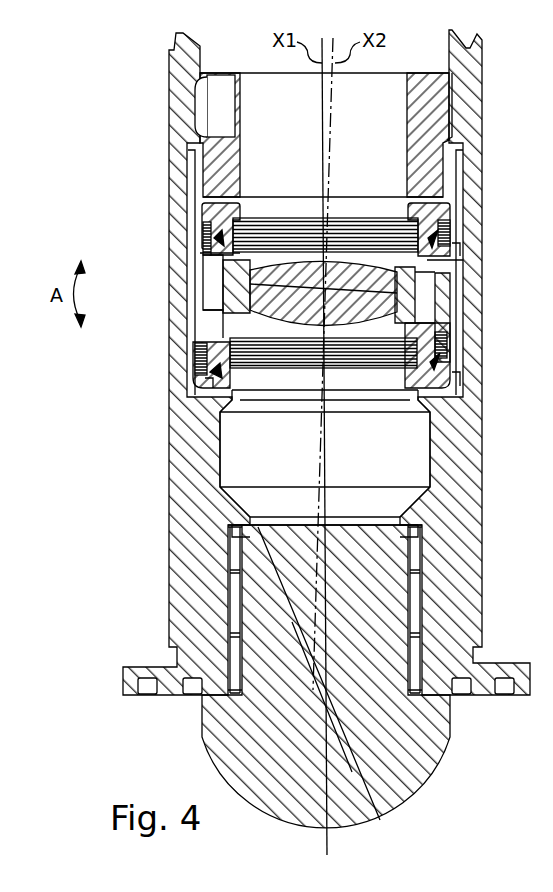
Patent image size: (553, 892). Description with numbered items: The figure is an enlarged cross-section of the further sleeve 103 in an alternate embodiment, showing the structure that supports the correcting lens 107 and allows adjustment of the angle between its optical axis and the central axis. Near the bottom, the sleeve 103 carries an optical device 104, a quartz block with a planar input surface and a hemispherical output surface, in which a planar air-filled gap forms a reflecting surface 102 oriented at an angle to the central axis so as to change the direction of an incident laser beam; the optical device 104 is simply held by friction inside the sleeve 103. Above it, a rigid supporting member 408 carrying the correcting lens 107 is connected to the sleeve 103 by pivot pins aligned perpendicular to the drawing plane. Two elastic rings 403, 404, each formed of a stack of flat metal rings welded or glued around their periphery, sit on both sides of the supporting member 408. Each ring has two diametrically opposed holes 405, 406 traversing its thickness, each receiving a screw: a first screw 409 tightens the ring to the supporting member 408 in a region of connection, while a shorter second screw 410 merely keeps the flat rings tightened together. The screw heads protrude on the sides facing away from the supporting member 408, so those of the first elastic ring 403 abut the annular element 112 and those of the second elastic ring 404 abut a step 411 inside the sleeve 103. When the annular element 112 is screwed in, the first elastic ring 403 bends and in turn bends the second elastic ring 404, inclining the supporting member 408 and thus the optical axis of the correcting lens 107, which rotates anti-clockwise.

The reflecting surface 102 is at (346, 742).
The further sleeve 103 is at (470, 141).
The optical device 104 is at (400, 783).
The correcting lens 107 is at (408, 272).
The annular element 112 is at (437, 117).
The first elastic ring 403 is at (282, 236).
The second elastic ring 404 is at (238, 322).
The hole 405 is at (208, 240).
The hole 406 is at (452, 248).
The supporting member 408 is at (456, 300).
The first screw 409 is at (222, 276).
The second screw 410 is at (448, 211).
The step 411 is at (458, 383).